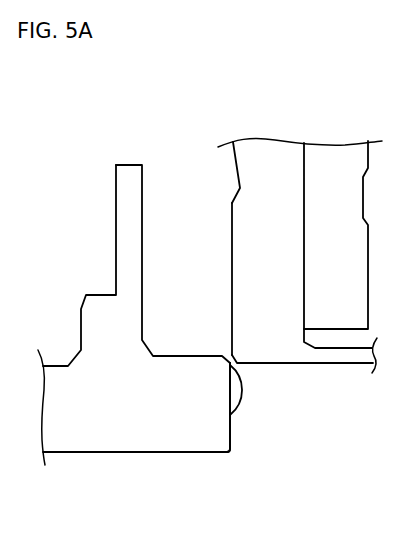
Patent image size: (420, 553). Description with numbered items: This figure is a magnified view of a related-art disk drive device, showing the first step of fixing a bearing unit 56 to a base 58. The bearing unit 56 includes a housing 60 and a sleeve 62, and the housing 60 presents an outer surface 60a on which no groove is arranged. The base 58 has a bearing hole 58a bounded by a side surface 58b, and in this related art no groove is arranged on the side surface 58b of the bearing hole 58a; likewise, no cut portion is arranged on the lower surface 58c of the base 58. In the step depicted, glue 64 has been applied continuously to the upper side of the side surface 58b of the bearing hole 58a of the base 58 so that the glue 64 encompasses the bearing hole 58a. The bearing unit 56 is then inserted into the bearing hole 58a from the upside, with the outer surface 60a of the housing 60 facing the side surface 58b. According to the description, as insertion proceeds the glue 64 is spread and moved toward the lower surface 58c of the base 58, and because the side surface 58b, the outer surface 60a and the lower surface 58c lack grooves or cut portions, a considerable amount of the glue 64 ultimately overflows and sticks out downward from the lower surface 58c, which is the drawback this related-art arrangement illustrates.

The bearing unit 56 is at (350, 93).
The housing 60 is at (275, 153).
The sleeve 62 is at (326, 153).
The outer surface of housing 60a is at (232, 277).
The glue 64 is at (237, 385).
The base 58 is at (68, 432).
The lower surface of base 58c is at (130, 453).
The bearing hole 58a is at (233, 435).
The side surface of bearing hole 58b is at (271, 441).